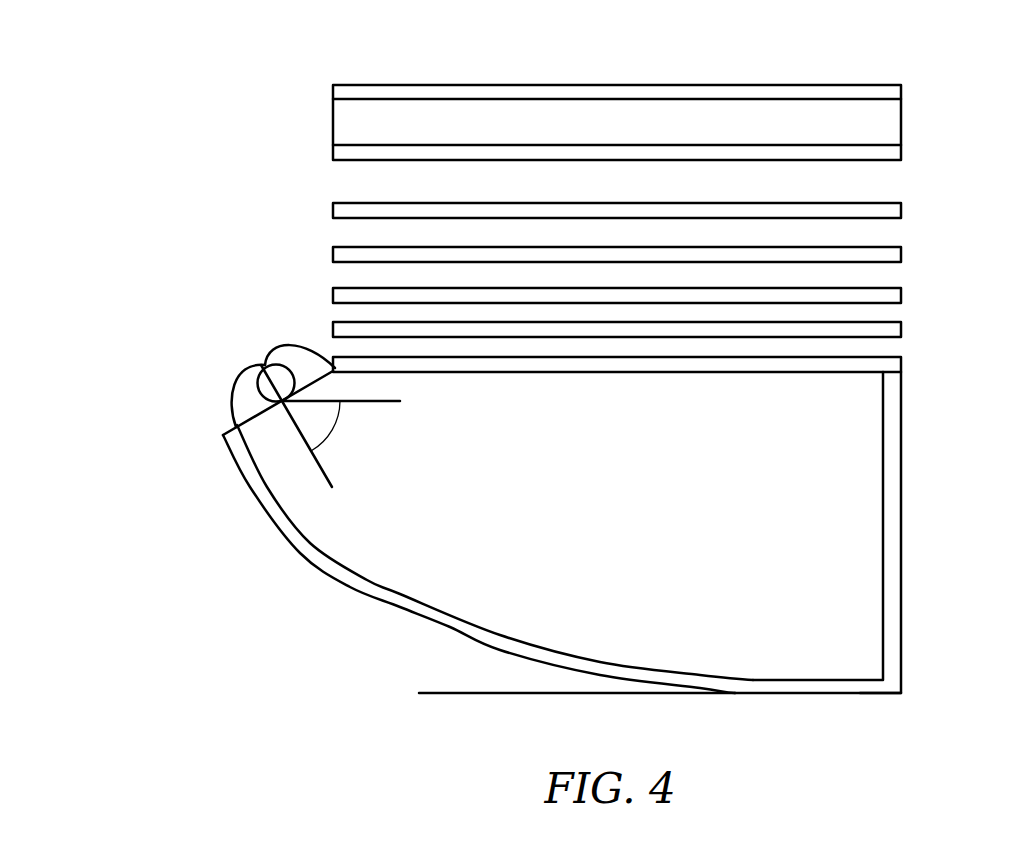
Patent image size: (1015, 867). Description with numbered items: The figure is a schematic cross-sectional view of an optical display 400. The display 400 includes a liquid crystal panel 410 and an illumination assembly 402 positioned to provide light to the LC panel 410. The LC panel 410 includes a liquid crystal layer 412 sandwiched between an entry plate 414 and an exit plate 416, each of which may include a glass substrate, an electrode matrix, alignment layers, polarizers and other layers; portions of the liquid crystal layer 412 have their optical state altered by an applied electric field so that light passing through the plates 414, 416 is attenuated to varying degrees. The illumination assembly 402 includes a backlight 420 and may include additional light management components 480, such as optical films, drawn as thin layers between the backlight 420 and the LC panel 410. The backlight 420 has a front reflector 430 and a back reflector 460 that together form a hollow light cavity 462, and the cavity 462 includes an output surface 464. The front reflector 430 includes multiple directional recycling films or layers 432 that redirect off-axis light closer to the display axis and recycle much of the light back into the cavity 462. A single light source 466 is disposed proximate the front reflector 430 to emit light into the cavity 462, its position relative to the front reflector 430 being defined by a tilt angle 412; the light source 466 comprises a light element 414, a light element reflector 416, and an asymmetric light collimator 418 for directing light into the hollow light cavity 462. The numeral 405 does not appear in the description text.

The optical display 400 is at (280, 51).
The illumination assembly 402 is at (112, 218).
The base surface 405 is at (733, 696).
The liquid crystal panel 410 is at (326, 85).
The liquid crystal layer 412 is at (904, 118).
The entry plate 414 is at (904, 150).
The exit plate 416 is at (904, 91).
The asymmetric light collimator 418 is at (306, 553).
The backlight 420 is at (176, 297).
The front reflector 430 is at (657, 330).
The directional recycling films or layers 432 is at (657, 385).
The back reflector 460 is at (858, 694).
The hollow light cavity 462 is at (602, 520).
The output surface 464 is at (892, 287).
The light source 466 is at (229, 400).
The light management components 480 is at (326, 203).